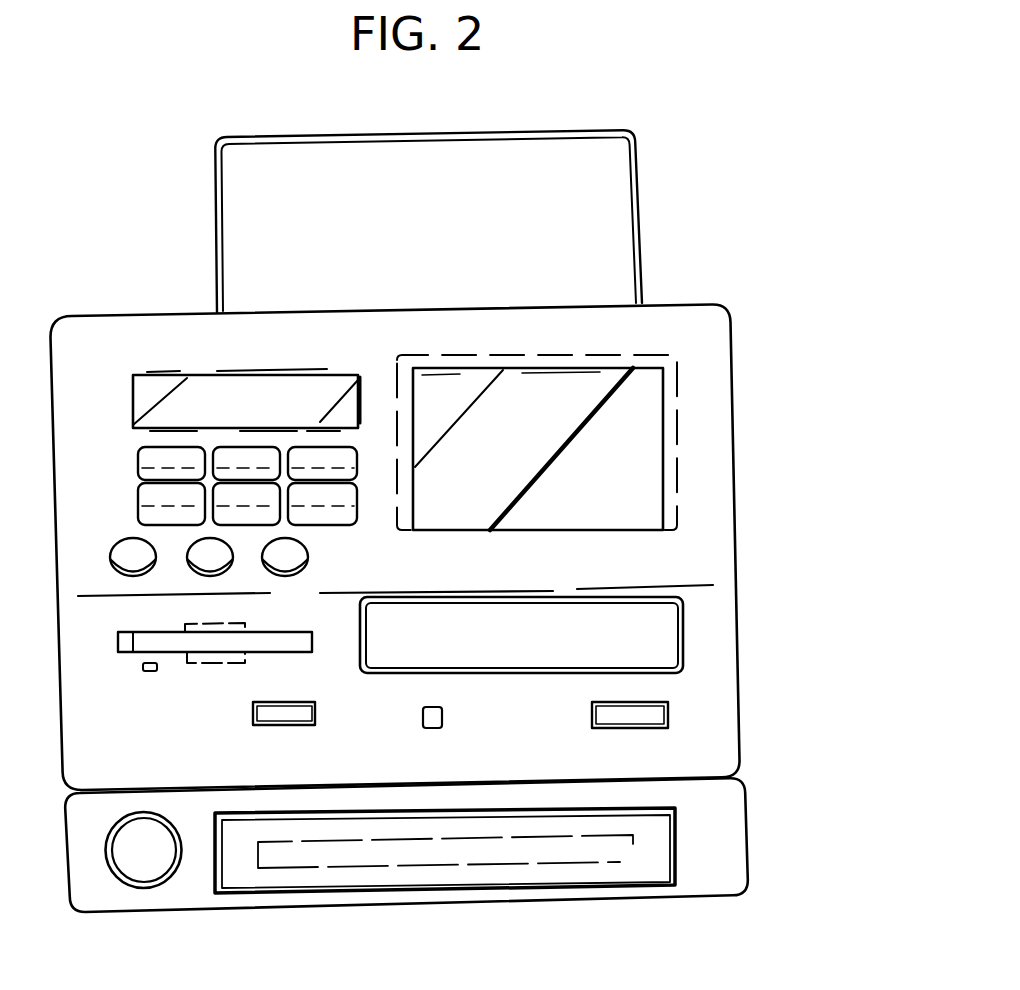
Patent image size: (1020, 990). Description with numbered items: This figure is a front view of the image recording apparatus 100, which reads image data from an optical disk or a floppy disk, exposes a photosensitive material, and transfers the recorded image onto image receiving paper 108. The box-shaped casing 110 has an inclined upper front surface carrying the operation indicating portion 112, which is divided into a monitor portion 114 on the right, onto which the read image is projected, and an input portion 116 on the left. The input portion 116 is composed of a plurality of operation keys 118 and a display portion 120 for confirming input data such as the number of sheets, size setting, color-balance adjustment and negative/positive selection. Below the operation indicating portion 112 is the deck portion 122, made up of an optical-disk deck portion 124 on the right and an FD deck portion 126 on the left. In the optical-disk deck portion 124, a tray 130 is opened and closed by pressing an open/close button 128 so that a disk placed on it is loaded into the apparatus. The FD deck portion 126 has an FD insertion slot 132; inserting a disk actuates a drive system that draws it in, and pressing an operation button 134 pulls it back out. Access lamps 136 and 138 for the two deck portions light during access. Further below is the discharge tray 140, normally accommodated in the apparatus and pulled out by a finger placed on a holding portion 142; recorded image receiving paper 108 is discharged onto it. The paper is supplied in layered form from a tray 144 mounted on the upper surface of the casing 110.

The image recording apparatus 100 is at (762, 378).
The image receiving paper 108 is at (600, 160).
The casing 110 is at (722, 530).
The operation indicating portion 112 is at (210, 257).
The monitor portion 114 is at (437, 397).
The input portion 116 is at (115, 381).
The operation keys 118 is at (130, 552).
The display portion 120 is at (133, 397).
The deck portion 122 is at (840, 612).
The optical-disk deck portion 124 is at (689, 641).
The FD deck portion 126 is at (313, 655).
The open/close button 128 is at (668, 727).
The tray 130 is at (672, 617).
The FD insertion slot 132 is at (128, 652).
The operation button 134 is at (315, 723).
The access lamp 136 is at (435, 723).
The access lamp 138 is at (148, 672).
The discharge tray 140 is at (677, 843).
The holding portion 142 is at (547, 842).
The tray 144 is at (637, 200).